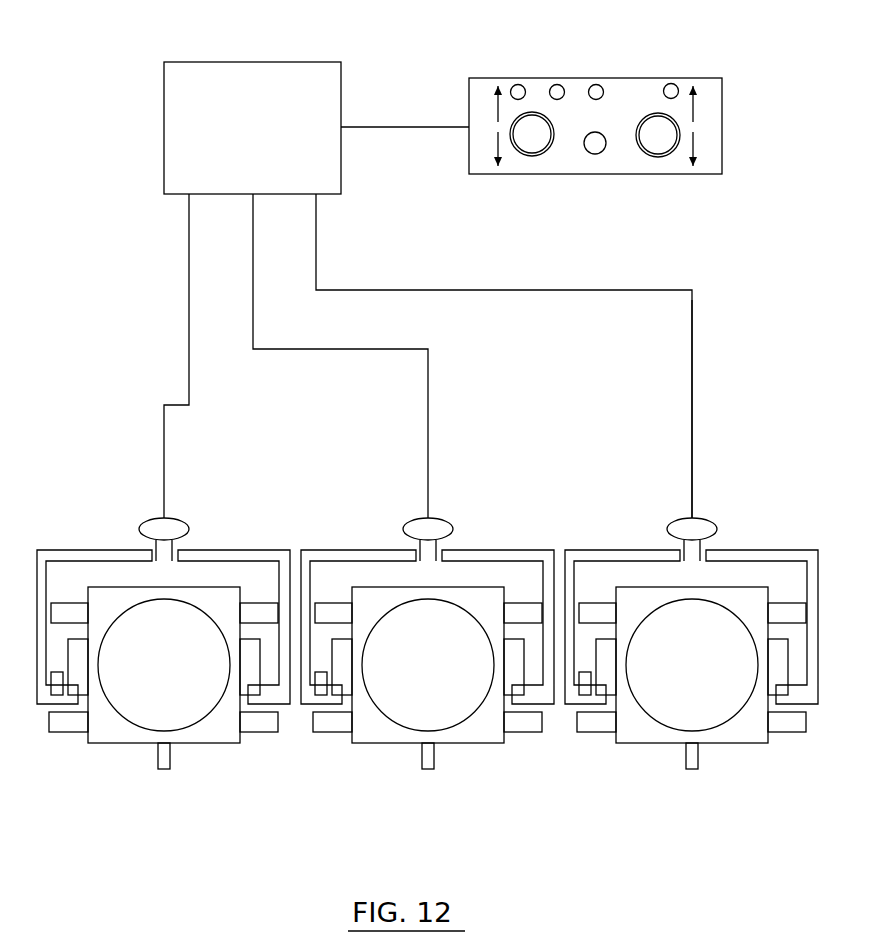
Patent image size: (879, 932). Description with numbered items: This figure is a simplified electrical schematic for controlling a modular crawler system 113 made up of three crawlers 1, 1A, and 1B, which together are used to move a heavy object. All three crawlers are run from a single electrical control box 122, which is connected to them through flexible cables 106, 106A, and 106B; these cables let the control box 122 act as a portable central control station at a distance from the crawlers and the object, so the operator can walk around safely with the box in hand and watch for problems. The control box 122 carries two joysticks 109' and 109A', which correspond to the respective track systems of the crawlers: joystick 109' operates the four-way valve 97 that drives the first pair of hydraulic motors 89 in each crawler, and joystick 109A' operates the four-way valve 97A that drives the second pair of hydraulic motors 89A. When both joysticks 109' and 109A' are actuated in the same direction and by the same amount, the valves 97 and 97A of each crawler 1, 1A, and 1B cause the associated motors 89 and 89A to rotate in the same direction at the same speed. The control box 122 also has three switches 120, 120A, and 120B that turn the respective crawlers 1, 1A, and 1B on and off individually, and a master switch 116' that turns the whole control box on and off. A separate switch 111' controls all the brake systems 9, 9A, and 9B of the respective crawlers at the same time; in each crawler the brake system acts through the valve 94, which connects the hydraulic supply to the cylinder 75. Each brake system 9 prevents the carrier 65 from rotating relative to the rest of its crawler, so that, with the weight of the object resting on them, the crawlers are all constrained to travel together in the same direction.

The crawler 1 is at (163, 650).
The crawler 1A is at (427, 675).
The crawler 1B is at (691, 678).
The brake system 9 is at (191, 731).
The brake system 9A is at (477, 720).
The brake system 9B is at (739, 719).
The carrier 65 is at (214, 720).
The cylinder 75 is at (158, 762).
The hydraulic motors 89 is at (267, 610).
The hydraulic motors 89A is at (62, 610).
The valve 94 is at (58, 684).
The four-way valve 97 is at (252, 672).
The four-way valve 97A is at (80, 647).
The flexible cable 106 is at (189, 343).
The flexible cable 106A is at (253, 325).
The flexible cable 106B is at (316, 270).
The joystick 109' is at (497, 173).
The joystick 109A' is at (684, 177).
The switch 111' is at (693, 57).
The modular crawler system 113 is at (708, 408).
The master switch 116' is at (611, 186).
The switch 120 is at (518, 84).
The switch 120A is at (557, 84).
The switch 120B is at (596, 84).
The electrical control box 122 is at (573, 178).